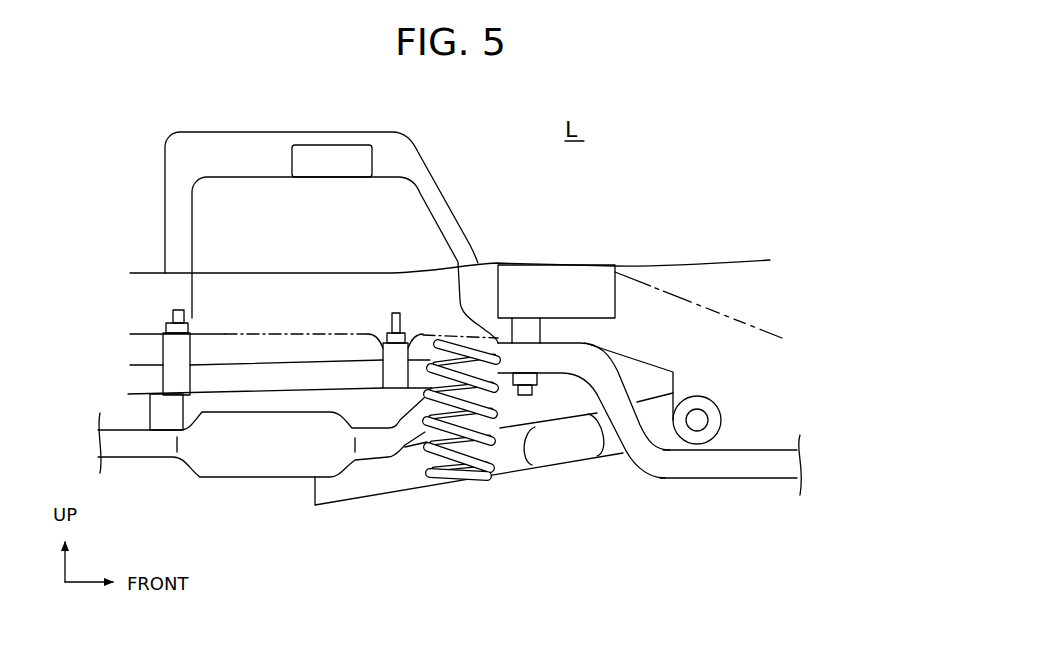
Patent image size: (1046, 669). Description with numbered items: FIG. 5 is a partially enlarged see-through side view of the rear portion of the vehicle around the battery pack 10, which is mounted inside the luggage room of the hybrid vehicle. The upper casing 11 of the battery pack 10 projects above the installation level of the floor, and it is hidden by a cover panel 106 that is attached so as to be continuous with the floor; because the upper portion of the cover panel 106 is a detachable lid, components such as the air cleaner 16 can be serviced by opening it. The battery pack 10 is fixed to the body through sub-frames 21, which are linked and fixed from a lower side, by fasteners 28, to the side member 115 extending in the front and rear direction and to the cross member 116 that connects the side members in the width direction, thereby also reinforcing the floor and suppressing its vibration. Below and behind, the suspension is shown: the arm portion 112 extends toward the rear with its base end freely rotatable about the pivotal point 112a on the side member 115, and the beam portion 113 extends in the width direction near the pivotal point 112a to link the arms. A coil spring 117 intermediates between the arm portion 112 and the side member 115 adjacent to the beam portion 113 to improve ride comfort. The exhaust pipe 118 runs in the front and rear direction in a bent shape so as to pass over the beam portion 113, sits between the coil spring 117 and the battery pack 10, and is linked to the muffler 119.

The battery pack 10 is at (243, 158).
The upper casing 11 is at (423, 192).
The air cleaner 16 is at (317, 152).
The sub-frame 21 is at (282, 372).
The fastener 28 is at (170, 318).
The cover panel 106 is at (383, 132).
The arm portion 112 is at (355, 478).
The pivotal point 112a is at (697, 421).
The beam portion 113 is at (585, 435).
The side member 115 is at (725, 322).
The cross member 116 is at (615, 313).
The coil spring 117 is at (450, 472).
The exhaust pipe 118 is at (143, 447).
The muffler 119 is at (257, 462).